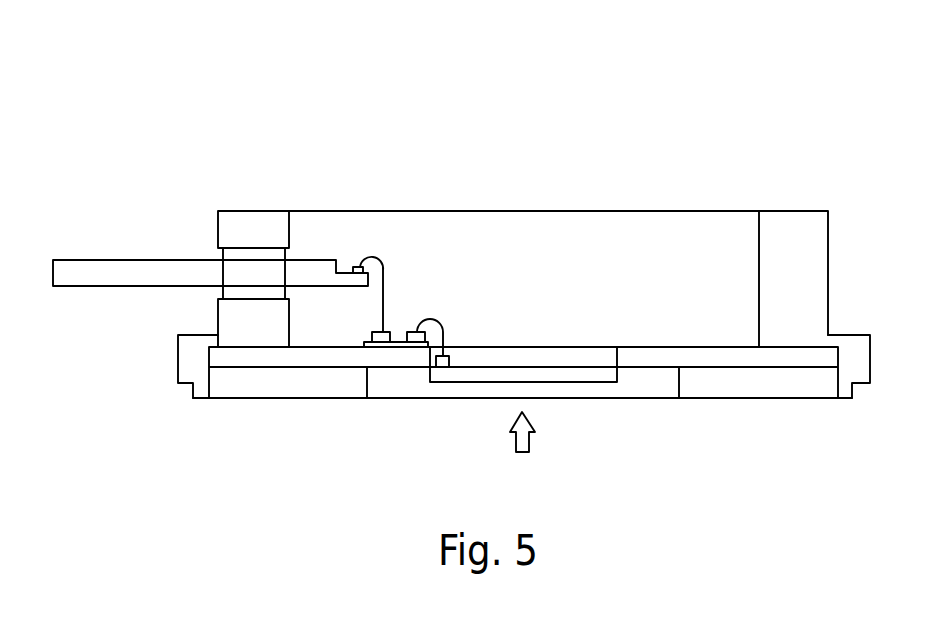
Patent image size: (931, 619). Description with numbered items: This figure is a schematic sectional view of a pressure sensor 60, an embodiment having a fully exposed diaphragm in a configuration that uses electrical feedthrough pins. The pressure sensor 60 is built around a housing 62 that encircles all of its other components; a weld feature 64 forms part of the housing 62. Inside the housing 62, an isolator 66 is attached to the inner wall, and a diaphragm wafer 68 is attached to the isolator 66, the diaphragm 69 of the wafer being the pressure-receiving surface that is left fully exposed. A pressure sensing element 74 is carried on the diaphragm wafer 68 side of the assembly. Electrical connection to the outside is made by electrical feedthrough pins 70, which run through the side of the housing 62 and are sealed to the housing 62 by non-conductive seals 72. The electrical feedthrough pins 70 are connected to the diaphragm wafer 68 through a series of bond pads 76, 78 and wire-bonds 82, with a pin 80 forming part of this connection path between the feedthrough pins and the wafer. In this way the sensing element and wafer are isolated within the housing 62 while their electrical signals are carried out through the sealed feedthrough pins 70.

The pressure sensor 60 is at (750, 85).
The housing 62 is at (783, 317).
The weld feature 64 is at (860, 393).
The isolator 66 is at (722, 355).
The diaphragm wafer 68 is at (395, 402).
The diaphragm 69 is at (595, 402).
The electrical feedthrough pins 70 is at (385, 280).
The non-conductive seals 72 is at (215, 254).
The pressure sensing element 74 is at (522, 379).
The bond pad 76 is at (345, 352).
The bond pad 78 is at (442, 372).
The pin 80 is at (347, 267).
The wire-bonds 82 is at (380, 307).